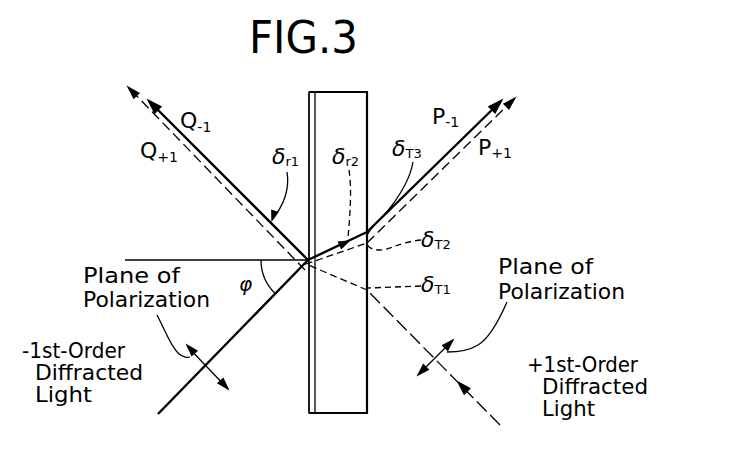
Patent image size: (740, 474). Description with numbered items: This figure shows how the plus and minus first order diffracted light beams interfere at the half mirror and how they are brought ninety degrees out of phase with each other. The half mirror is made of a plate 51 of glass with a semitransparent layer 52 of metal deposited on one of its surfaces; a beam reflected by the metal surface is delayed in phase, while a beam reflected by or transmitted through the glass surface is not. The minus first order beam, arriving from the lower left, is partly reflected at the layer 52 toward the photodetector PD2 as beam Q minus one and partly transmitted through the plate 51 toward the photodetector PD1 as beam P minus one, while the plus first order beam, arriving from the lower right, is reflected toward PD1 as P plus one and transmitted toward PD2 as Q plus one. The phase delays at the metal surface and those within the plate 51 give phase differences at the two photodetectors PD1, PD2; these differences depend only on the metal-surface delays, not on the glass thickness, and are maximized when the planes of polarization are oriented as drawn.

The plate of glass 51 is at (352, 387).
The semitransparent layer of metal 52 is at (312, 383).
The photodetector PD1 is at (514, 87).
The photodetector PD2 is at (130, 87).